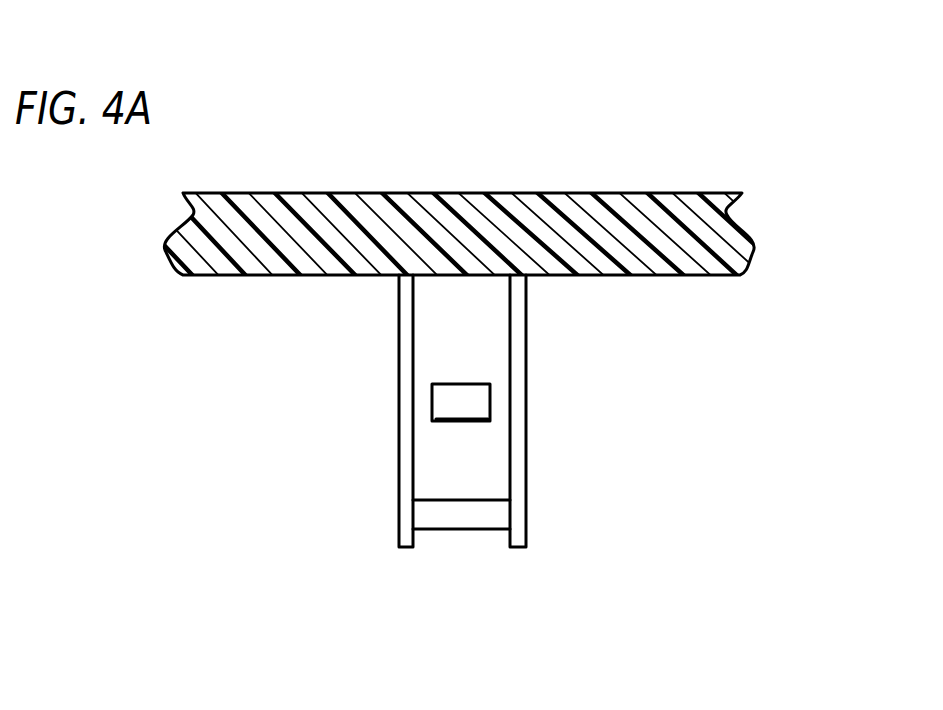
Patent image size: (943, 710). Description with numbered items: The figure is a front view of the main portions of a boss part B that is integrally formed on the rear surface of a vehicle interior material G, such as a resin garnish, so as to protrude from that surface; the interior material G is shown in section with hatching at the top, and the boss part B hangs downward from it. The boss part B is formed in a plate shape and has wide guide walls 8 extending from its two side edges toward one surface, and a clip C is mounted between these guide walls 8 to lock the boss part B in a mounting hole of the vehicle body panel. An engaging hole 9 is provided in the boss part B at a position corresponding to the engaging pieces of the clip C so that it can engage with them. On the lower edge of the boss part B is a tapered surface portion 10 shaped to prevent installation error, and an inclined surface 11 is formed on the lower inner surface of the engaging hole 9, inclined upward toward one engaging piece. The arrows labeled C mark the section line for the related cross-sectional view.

The vehicle interior material G is at (665, 205).
The guide walls 8 is at (406, 355).
The engaging hole 9 is at (467, 397).
The tapered surface portion 10 is at (456, 517).
The inclined surface 11 is at (458, 421).
The boss part B is at (375, 557).
The clip C is at (460, 150).